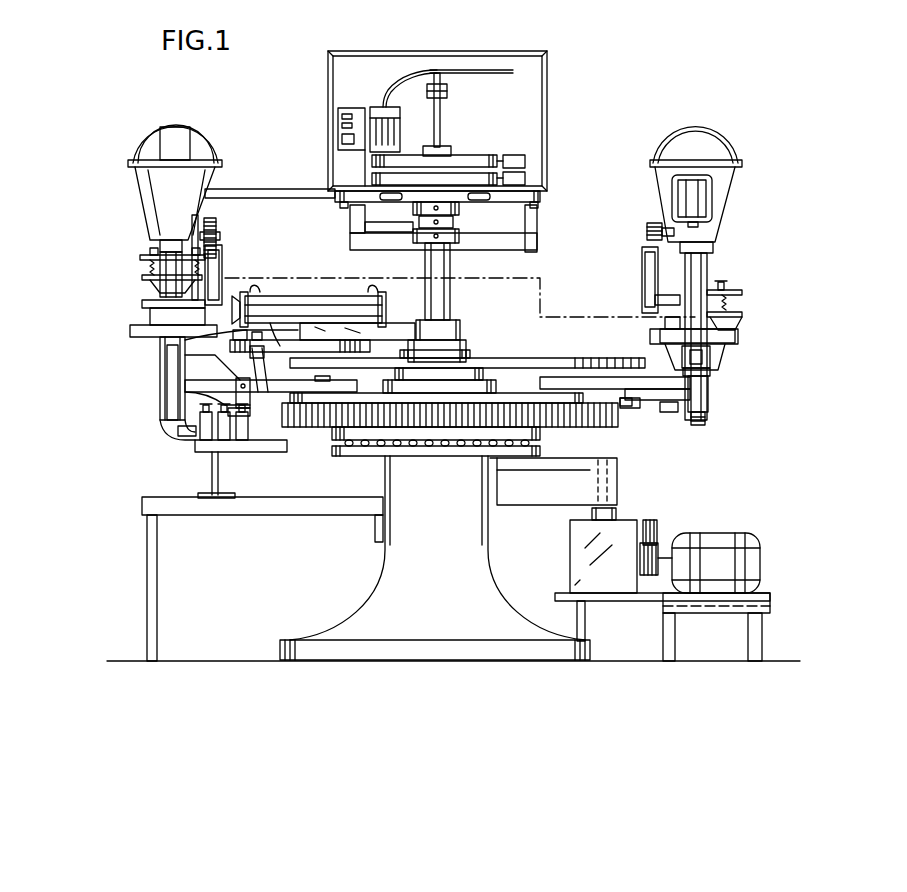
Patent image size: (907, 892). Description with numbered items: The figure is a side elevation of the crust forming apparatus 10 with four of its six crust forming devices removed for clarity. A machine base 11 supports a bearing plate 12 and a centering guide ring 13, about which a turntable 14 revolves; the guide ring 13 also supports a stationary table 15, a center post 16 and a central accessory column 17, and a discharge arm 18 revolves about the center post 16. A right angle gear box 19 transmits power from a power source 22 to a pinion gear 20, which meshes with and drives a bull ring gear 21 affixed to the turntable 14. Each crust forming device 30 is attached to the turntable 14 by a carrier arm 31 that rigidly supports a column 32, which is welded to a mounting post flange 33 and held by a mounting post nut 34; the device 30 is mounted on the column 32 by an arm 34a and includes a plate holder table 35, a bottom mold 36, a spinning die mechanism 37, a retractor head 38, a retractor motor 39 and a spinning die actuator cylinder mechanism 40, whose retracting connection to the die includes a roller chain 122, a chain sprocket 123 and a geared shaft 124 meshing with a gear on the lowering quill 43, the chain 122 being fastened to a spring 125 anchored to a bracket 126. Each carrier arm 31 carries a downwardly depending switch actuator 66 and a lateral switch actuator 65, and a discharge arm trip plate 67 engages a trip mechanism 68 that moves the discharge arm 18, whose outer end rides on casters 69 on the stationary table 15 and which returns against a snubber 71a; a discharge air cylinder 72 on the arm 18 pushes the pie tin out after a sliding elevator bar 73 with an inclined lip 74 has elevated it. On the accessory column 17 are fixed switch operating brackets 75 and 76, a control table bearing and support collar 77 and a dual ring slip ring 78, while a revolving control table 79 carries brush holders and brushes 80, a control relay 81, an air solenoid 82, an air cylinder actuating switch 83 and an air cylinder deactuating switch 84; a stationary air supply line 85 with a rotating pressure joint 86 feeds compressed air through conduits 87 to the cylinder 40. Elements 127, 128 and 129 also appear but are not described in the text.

The crust forming apparatus 10 is at (708, 508).
The machine base 11 is at (440, 604).
The bearing plate 12 is at (364, 453).
The centering guide ring 13 is at (470, 370).
The turntable 14 is at (487, 382).
The stationary table 15 is at (530, 358).
The center post 16 is at (462, 333).
The accessory column 17 is at (451, 291).
The discharge arm 18 is at (372, 330).
The right angle gear box 19 is at (632, 520).
The pinion gear 20 is at (617, 460).
The bull ring gear 21 is at (443, 427).
The power source 22 is at (745, 538).
The crust forming device 30 is at (126, 189).
The carrier arm 31 is at (190, 388).
The column 32 is at (160, 295).
The mounting post flange 33 is at (160, 365).
The mounting post nut 34 is at (167, 415).
The arm 34a is at (712, 356).
The plate holder table 35 is at (130, 331).
The bottom mold 36 is at (150, 316).
The spinning die mechanism 37 is at (133, 279).
The retractor head 38 is at (140, 214).
The retractor motor 39 is at (672, 178).
The spinning die actuator cylinder mechanism 40 is at (222, 255).
The lowering quill 43 is at (160, 245).
The switch actuator 65 is at (178, 433).
The switch actuator 66 is at (240, 380).
The discharge arm trip plate 67 is at (285, 365).
The trip mechanism 68 is at (263, 392).
The casters 69 is at (185, 340).
The snubber 71a is at (272, 323).
The discharge air cylinder 72 is at (302, 296).
The sliding elevator bar 73 is at (165, 428).
The inclined lip 74 is at (200, 445).
The switch operating bracket 75 is at (538, 230).
The switch operating bracket 76 is at (362, 238).
The control table bearing and support collar 77 is at (460, 212).
The dual ring slip ring 78 is at (470, 159).
The revolving control table 79 is at (542, 200).
The brush holders and brushes 80 is at (526, 178).
The control relay 81 is at (338, 124).
The air solenoid 82 is at (382, 108).
The air cylinder actuating switch 83 is at (340, 200).
The air cylinder deactuating switch 84 is at (350, 212).
The stationary air supply line 85 is at (442, 120).
The rotating pressure joint 86 is at (448, 90).
The conduits 87 is at (436, 70).
The roller chain 122 is at (216, 228).
The chain sprocket 123 is at (220, 236).
The geared shaft 124 is at (198, 228).
The spring 125 is at (642, 268).
The bracket 126 is at (655, 300).
The nozzle 127 is at (205, 452).
The nozzle 128 is at (227, 438).
The nozzle 129 is at (250, 438).